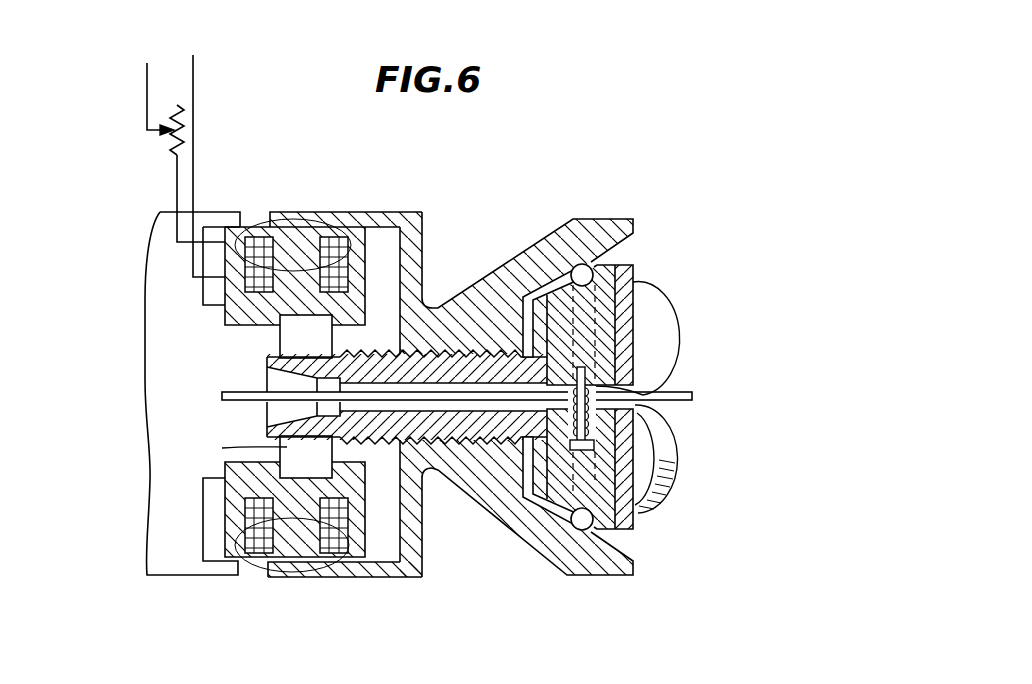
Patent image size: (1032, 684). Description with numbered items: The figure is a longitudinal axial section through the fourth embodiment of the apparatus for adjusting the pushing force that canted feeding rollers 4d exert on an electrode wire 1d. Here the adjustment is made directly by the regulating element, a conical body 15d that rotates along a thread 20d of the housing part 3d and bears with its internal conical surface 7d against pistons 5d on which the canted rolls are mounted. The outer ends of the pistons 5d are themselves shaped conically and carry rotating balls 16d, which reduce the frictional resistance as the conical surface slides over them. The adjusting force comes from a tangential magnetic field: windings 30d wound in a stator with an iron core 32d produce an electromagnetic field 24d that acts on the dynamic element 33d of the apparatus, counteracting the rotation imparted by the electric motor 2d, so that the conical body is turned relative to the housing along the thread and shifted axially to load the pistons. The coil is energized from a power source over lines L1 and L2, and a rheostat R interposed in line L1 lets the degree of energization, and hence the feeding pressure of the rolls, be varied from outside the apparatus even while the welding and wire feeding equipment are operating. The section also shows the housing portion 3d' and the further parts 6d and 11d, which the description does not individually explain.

The line L1 is at (145, 108).
The line L2 is at (200, 100).
The rheostat R is at (173, 152).
The electric motor 2d is at (152, 550).
The electromagnetic field 24d is at (248, 214).
The windings 30d is at (270, 542).
The iron core 32d is at (253, 563).
The dynamic element 33d is at (312, 210).
The conical body 15d is at (500, 494).
The thread 20d is at (424, 481).
The threaded spindle 3d' is at (407, 387).
The spindle collar 6d is at (277, 378).
The electrode wire 1d is at (693, 393).
The internal conical surface 7d is at (535, 262).
The housing part 3d is at (636, 397).
The pistons 5d is at (599, 266).
The rotating balls 16d is at (588, 265).
The canted feeding rollers 4d is at (662, 333).
The spring-loaded pin 11d is at (594, 443).